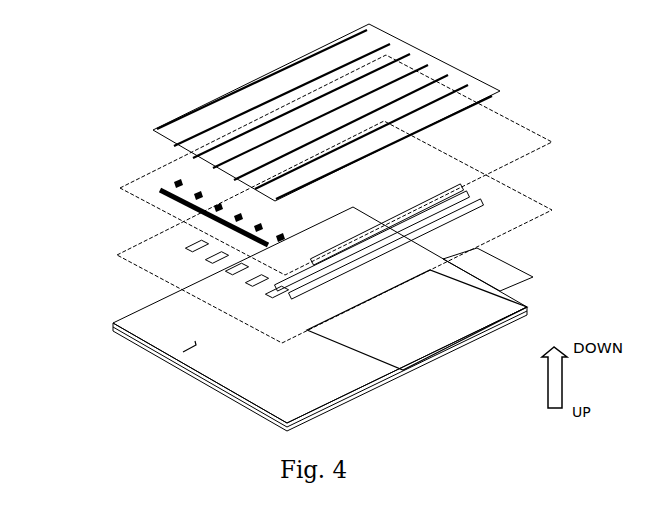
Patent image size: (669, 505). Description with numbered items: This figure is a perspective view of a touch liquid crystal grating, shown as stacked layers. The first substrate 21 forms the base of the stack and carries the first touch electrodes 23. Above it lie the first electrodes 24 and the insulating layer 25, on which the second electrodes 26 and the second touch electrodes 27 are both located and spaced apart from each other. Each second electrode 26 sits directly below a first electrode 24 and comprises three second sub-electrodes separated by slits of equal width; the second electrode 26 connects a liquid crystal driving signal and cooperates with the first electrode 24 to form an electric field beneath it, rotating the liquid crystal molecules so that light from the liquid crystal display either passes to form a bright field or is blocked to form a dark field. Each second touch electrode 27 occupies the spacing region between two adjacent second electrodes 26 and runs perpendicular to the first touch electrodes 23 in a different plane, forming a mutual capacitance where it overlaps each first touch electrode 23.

The first substrate 21 is at (130, 330).
The first touch electrode 23 is at (400, 368).
The first electrode 24 is at (183, 247).
The insulating layer 25 is at (147, 195).
The second electrode 26 is at (283, 78).
The second touch electrode 27 is at (155, 130).